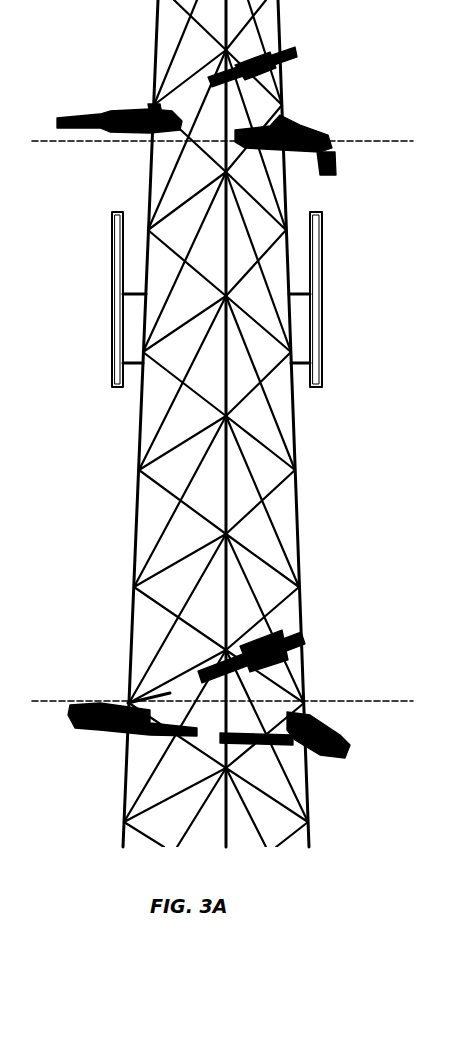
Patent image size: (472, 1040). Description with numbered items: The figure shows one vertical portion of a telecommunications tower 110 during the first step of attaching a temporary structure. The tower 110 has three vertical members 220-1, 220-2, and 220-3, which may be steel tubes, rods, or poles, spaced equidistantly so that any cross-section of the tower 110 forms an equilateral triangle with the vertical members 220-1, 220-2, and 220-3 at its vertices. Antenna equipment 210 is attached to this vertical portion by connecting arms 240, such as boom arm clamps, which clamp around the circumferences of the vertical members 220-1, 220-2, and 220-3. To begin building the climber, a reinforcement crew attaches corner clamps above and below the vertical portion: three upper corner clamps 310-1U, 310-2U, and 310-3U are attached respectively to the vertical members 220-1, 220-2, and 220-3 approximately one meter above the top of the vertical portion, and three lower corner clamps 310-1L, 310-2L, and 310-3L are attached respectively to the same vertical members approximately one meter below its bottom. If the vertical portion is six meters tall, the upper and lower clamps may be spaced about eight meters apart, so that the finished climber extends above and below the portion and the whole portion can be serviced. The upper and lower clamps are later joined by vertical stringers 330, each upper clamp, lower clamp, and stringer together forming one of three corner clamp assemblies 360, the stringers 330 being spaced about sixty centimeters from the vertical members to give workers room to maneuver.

The tower 110 is at (241, 423).
The antenna equipment 210 is at (399, 217).
The vertical member 220-1 is at (136, 535).
The vertical member 220-2 is at (224, 600).
The vertical member 220-3 is at (301, 586).
The connecting arms 240 is at (298, 366).
The upper corner clamp 310-1U is at (100, 133).
The upper corner clamp 310-2U is at (292, 56).
The upper corner clamp 310-3U is at (307, 132).
The lower corner clamp 310-1L is at (83, 736).
The lower corner clamp 310-2L is at (307, 638).
The lower corner clamp 310-3L is at (342, 762).
The vertical stringers 330 is at (462, 536).
The corner clamp assemblies 360 is at (471, 704).